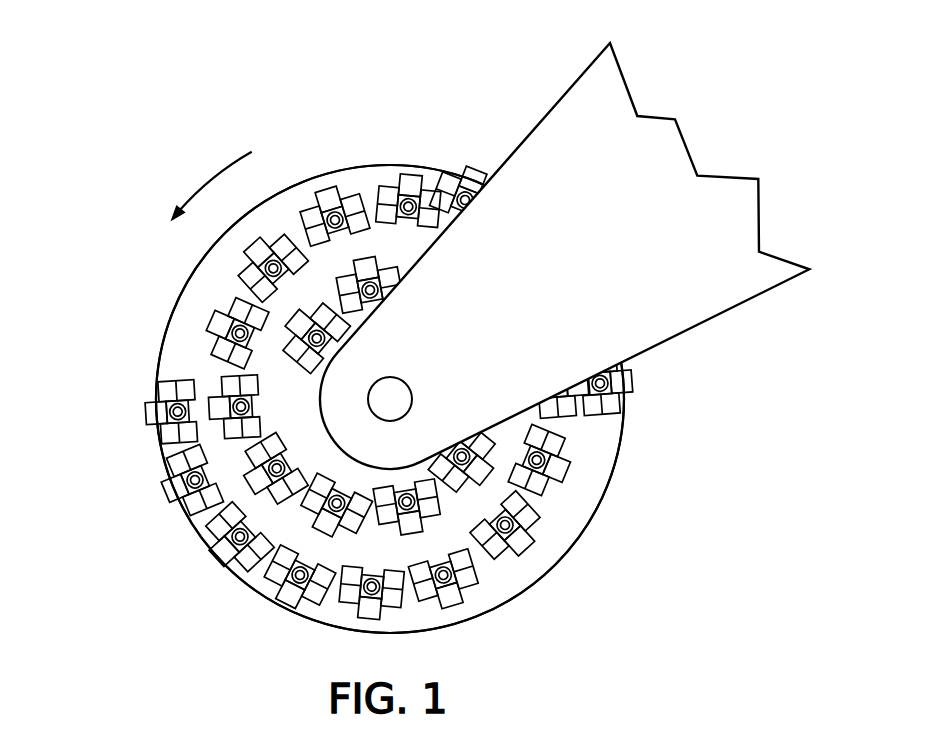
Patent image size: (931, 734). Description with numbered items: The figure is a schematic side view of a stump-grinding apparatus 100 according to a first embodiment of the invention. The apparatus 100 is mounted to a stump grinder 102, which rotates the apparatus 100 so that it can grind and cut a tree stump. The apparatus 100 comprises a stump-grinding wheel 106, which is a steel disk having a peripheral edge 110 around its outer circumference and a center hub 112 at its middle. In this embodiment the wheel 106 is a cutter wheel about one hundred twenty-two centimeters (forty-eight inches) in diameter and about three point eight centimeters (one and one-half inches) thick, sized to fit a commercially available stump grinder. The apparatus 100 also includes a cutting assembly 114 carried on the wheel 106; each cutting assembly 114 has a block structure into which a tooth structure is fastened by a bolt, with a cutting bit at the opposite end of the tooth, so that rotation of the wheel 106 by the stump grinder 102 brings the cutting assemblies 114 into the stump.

The stump-grinding apparatus 100 is at (427, 338).
The stump grinder 102 is at (697, 323).
The stump-grinding wheel 106 is at (567, 513).
The peripheral edge 110 is at (177, 297).
The center hub 112 is at (397, 377).
The cutting assembly 114 is at (165, 388).